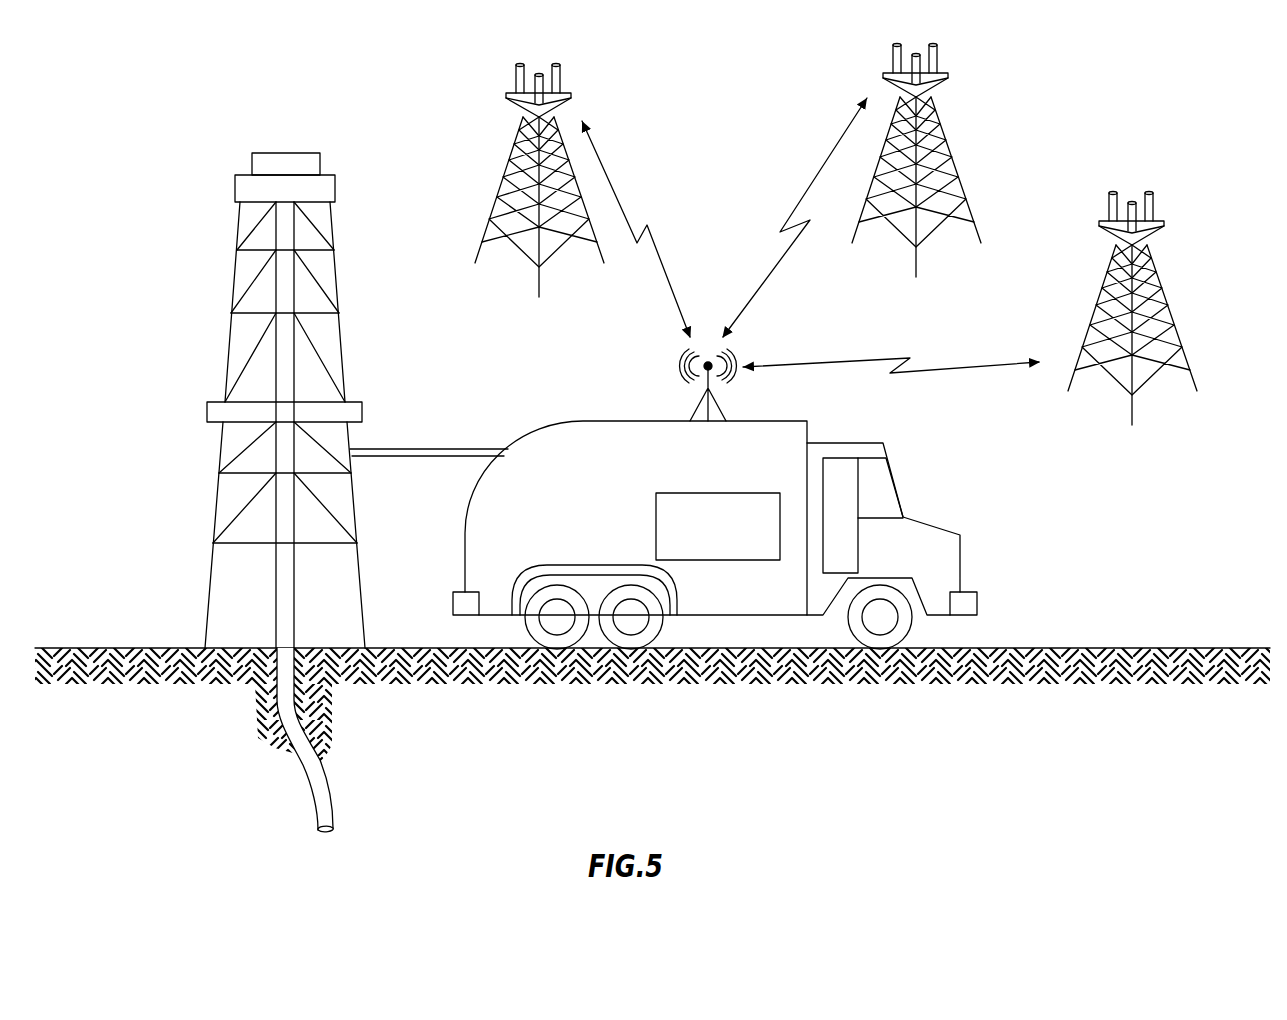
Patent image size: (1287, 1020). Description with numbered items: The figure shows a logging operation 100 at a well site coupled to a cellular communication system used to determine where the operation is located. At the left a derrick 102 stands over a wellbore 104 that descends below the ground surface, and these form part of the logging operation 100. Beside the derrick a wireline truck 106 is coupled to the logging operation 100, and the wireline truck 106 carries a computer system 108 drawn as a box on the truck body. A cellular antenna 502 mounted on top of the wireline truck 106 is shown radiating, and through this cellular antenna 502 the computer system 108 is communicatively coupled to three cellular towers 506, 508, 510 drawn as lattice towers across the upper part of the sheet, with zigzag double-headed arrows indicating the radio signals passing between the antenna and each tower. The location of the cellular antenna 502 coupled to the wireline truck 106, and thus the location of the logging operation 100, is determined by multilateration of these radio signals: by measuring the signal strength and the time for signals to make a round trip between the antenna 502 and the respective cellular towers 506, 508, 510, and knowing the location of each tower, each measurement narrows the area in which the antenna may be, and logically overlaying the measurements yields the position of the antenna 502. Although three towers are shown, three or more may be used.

The logging operation 100 is at (158, 110).
The derrick 102 is at (235, 188).
The wellbore 104 is at (333, 769).
The wireline truck 106 is at (545, 423).
The computer system 108 is at (733, 535).
The cellular antenna 502 is at (722, 404).
The cellular tower 506 is at (515, 140).
The cellular tower 508 is at (940, 130).
The cellular tower 510 is at (1160, 280).